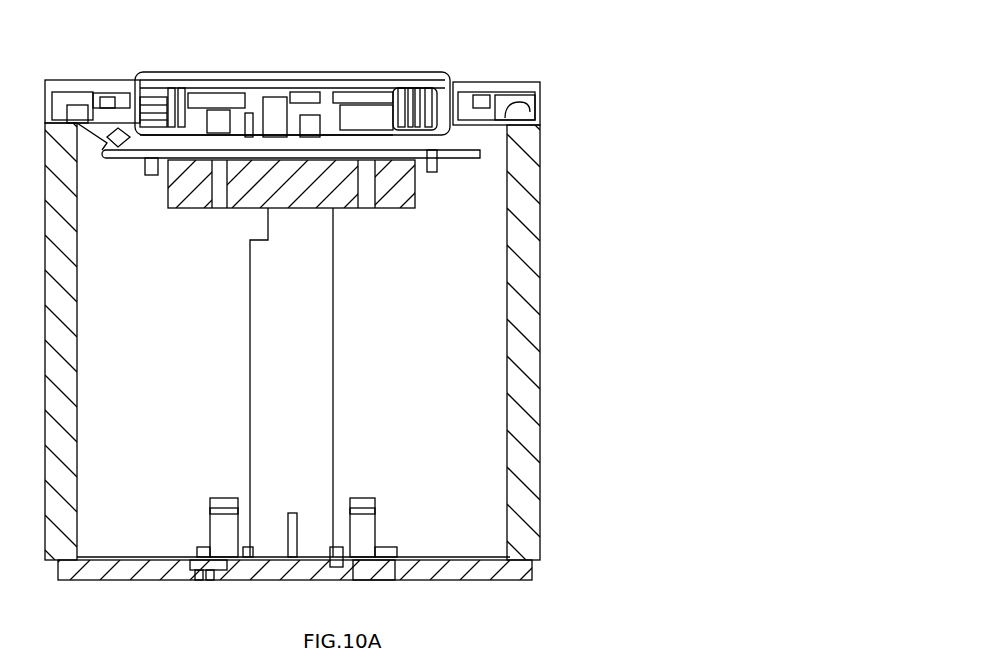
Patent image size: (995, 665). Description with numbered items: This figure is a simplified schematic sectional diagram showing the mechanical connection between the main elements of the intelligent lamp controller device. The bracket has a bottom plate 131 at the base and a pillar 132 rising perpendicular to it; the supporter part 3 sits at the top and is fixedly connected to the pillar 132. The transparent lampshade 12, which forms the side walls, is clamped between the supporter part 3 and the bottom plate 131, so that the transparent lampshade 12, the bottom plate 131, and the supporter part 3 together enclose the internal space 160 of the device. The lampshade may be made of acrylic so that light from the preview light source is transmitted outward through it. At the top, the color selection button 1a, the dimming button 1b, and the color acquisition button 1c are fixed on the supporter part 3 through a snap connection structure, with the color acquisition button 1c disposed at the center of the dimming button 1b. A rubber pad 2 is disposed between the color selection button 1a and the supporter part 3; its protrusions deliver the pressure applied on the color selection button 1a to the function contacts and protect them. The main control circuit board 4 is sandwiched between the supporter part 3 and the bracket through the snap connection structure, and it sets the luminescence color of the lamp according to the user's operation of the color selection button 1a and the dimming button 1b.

The color selection button 1a is at (478, 82).
The dimming button 1b is at (380, 76).
The color acquisition button 1c is at (287, 82).
The rubber pad 2 is at (478, 118).
The supporter part 3 is at (507, 115).
The main control circuit board 4 is at (480, 157).
The transparent lampshade 12 is at (527, 340).
The bottom plate 131 is at (470, 563).
The pillar 132 is at (300, 328).
The internal space 160 is at (430, 437).